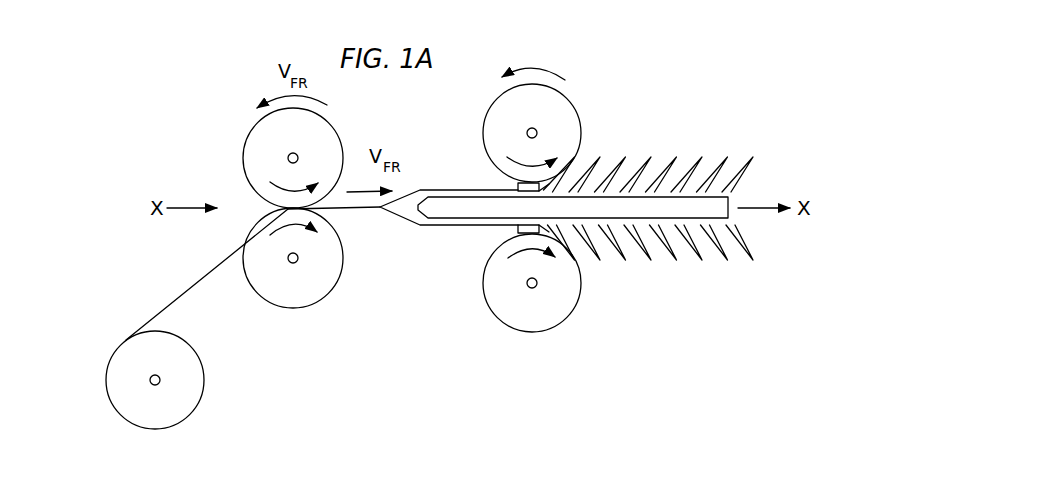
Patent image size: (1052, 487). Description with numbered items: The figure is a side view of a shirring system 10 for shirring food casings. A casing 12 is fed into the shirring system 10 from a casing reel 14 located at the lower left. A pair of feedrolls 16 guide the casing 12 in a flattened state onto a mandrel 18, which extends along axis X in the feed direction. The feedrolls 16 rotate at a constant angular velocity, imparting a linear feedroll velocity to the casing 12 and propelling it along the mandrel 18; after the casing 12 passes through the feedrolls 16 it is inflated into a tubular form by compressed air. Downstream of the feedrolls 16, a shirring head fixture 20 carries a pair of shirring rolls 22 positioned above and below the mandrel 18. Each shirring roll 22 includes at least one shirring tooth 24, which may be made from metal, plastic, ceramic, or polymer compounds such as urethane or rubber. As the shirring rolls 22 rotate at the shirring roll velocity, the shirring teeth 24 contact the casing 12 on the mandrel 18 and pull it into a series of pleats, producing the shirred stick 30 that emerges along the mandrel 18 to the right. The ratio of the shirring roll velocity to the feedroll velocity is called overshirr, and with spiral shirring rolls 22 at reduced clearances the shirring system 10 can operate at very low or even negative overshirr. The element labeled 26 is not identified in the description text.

The shirring system 10 is at (670, 54).
The casing 12 is at (192, 285).
The casing reel 14 is at (107, 381).
The feedrolls 16 is at (244, 157).
The mandrel 18 is at (440, 210).
The shirring head fixture 20 is at (580, 93).
The shirring roll 22 is at (582, 133).
The shirring tooth 24 is at (519, 185).
The roller axles 26 is at (527, 133).
The shirred stick 30 is at (708, 138).